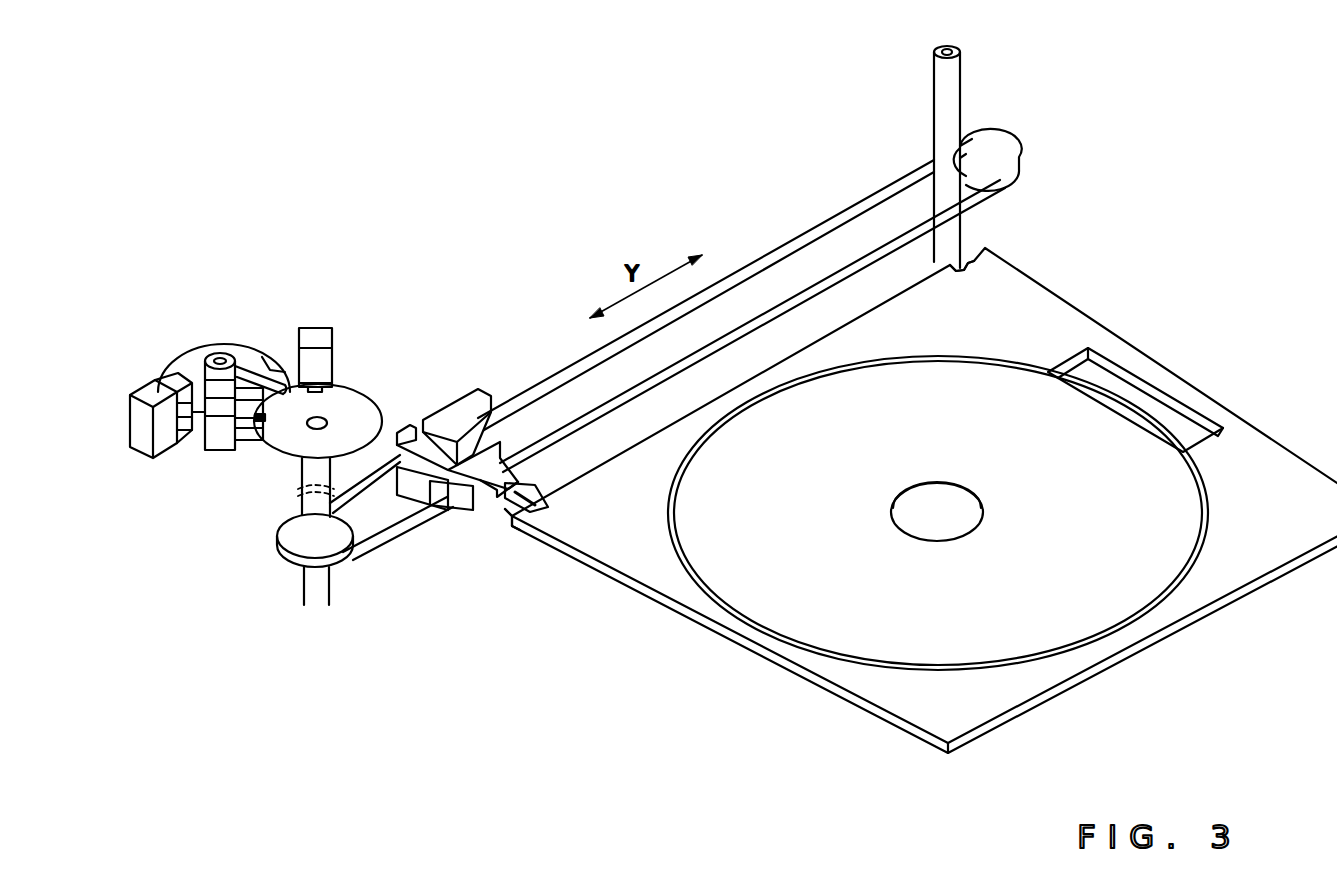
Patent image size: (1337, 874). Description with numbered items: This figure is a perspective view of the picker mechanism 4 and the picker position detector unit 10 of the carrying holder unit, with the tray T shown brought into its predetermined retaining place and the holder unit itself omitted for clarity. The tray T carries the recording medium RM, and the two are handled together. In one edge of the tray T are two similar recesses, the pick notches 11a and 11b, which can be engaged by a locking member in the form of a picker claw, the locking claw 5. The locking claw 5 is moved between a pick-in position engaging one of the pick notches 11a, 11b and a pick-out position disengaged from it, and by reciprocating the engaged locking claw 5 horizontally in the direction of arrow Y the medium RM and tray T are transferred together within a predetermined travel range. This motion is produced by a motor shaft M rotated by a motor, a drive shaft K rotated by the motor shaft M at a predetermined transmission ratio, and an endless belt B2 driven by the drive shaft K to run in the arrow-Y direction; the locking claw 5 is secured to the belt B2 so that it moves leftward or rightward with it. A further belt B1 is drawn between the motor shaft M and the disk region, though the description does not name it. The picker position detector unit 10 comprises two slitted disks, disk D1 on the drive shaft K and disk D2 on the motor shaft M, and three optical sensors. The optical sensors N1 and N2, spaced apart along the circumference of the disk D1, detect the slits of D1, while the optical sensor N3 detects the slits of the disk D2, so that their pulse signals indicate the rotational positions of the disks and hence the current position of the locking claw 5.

The picker position detector unit 10 is at (142, 350).
The slitted disk D2 is at (196, 355).
The motor shaft M is at (224, 350).
The first belt B1 is at (282, 377).
The optical sensor N1 is at (318, 334).
The slitted disk D1 is at (358, 398).
The optical sensor N3 is at (135, 432).
The optical sensor N2 is at (217, 445).
The drive shaft K is at (300, 473).
The endless belt B2 is at (393, 543).
The locking claw 5 is at (510, 507).
The pick notch 11b is at (547, 515).
The pick notch 11a is at (958, 265).
The picker mechanism 4 is at (333, 622).
The recording medium RM is at (1182, 492).
The tray T is at (943, 722).